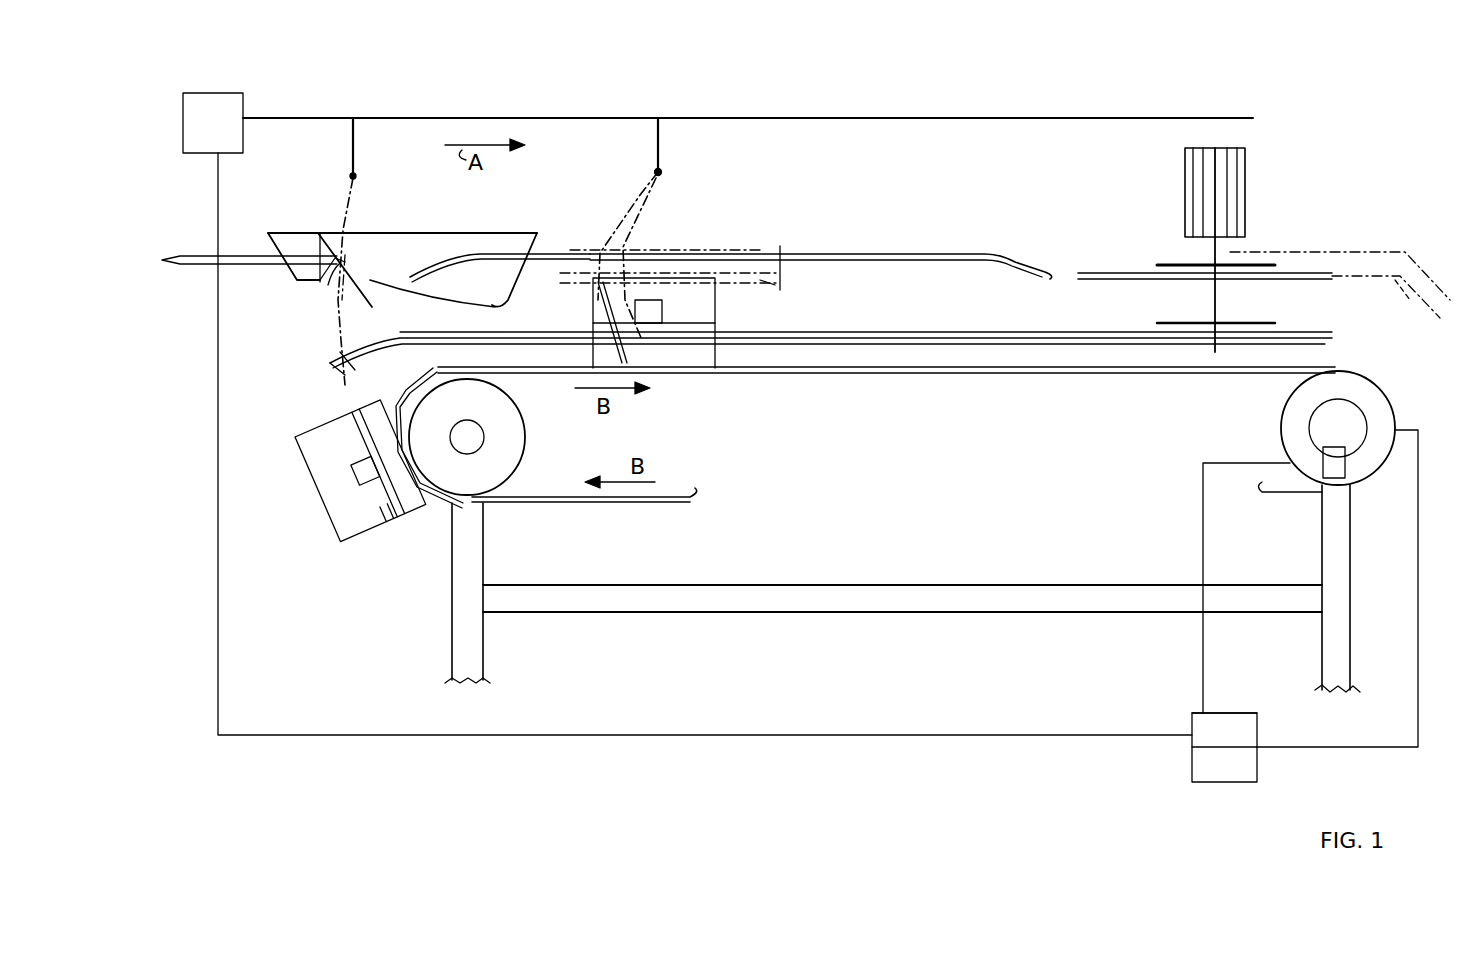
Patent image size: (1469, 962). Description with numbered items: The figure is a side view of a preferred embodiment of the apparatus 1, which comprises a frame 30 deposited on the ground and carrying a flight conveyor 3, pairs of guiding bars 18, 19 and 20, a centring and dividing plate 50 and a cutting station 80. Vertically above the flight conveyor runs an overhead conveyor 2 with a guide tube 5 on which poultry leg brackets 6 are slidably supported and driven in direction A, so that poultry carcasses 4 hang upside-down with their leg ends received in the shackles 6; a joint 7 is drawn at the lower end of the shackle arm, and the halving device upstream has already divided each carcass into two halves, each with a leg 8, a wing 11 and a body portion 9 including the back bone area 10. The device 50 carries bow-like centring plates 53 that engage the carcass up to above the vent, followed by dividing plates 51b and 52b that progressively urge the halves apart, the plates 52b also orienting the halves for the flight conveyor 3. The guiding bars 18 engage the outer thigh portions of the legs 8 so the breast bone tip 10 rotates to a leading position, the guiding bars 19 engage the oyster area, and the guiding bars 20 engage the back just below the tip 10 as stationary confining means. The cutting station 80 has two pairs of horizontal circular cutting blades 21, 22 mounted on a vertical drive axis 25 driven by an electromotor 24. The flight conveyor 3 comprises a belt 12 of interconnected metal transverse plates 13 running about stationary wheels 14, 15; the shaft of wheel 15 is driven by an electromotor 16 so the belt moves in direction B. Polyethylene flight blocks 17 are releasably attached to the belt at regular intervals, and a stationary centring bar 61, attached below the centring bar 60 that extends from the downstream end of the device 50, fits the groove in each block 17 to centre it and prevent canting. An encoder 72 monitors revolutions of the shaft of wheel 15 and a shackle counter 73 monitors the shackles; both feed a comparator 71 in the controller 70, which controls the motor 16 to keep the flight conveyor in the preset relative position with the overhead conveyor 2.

The apparatus 1 is at (1035, 105).
The overhead conveyor 2 is at (355, 102).
The flight conveyor 3 is at (921, 588).
The poultry carcass 4 is at (300, 302).
The guide tube 5 is at (539, 118).
The poultry leg bracket 6 is at (360, 147).
The pivot joint 7 is at (360, 178).
The leg 8 is at (360, 214).
The body portion 9 is at (831, 354).
The back bone area 10 is at (380, 240).
The wing 11 is at (372, 385).
The belt 12 is at (443, 506).
The transverse plate 13 is at (595, 505).
The wheel 14 is at (524, 428).
The wheel 15 is at (1320, 425).
The electromotor 16 is at (1295, 447).
The flight block 17 is at (705, 352).
The guiding bars 18 is at (718, 252).
The guiding bars 19 is at (762, 345).
The guiding bars 20 is at (1082, 282).
The circular cutting blade 21 is at (1255, 262).
The circular cutting blade 22 is at (1275, 322).
The electromotor 24 is at (1232, 178).
The vertical drive axis 25 is at (1220, 302).
The frame 30 is at (845, 605).
The centring and dividing plate 50 is at (310, 233).
The dividing plate 51b is at (337, 277).
The dividing plate 52b is at (400, 292).
The centring plate 53 is at (248, 258).
The centring bar 60 is at (758, 250).
The stationary centring bar 61 is at (768, 282).
The controller 70 is at (1205, 764).
The comparator 71 is at (1205, 727).
The encoder 72 is at (1340, 462).
The shackle counter 73 is at (217, 104).
The cutting station 80 is at (1300, 140).